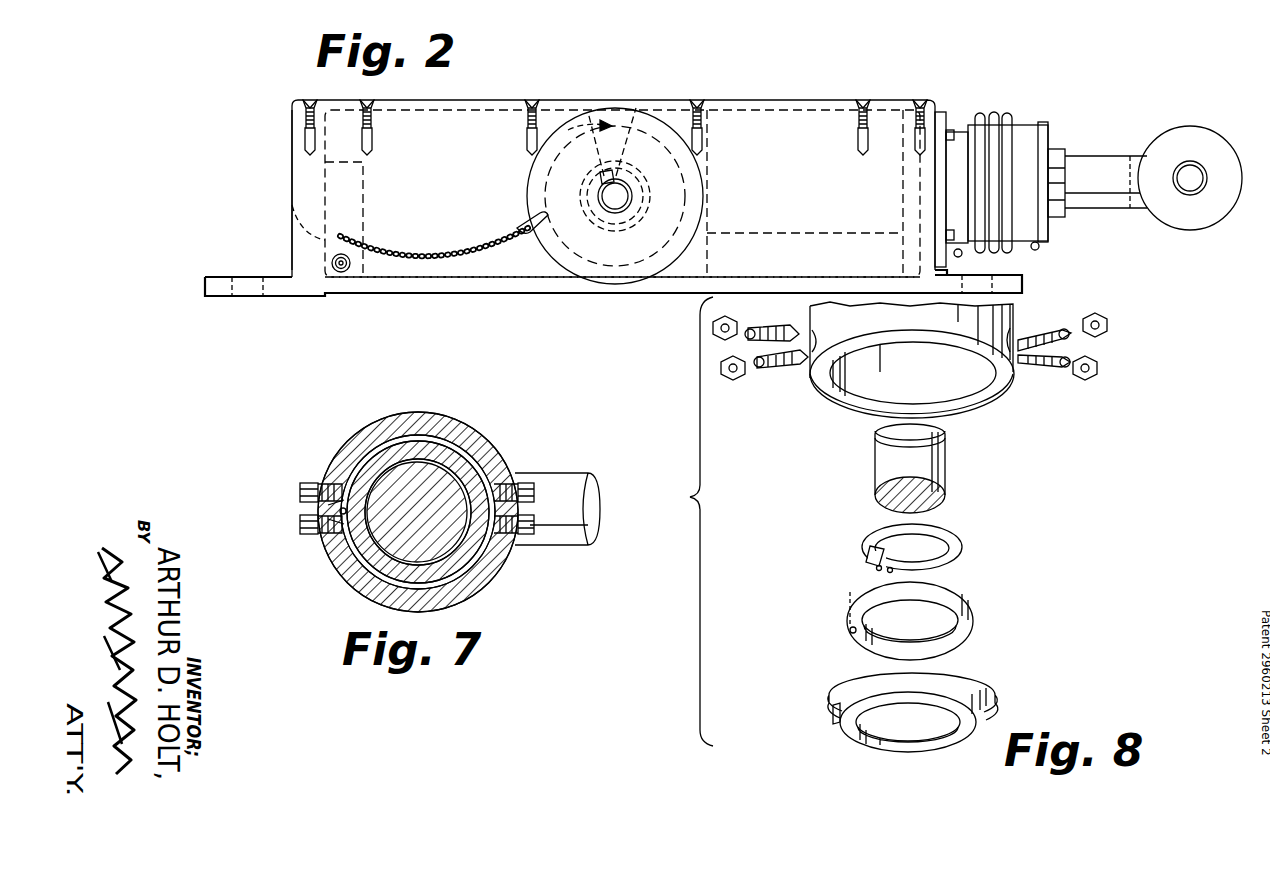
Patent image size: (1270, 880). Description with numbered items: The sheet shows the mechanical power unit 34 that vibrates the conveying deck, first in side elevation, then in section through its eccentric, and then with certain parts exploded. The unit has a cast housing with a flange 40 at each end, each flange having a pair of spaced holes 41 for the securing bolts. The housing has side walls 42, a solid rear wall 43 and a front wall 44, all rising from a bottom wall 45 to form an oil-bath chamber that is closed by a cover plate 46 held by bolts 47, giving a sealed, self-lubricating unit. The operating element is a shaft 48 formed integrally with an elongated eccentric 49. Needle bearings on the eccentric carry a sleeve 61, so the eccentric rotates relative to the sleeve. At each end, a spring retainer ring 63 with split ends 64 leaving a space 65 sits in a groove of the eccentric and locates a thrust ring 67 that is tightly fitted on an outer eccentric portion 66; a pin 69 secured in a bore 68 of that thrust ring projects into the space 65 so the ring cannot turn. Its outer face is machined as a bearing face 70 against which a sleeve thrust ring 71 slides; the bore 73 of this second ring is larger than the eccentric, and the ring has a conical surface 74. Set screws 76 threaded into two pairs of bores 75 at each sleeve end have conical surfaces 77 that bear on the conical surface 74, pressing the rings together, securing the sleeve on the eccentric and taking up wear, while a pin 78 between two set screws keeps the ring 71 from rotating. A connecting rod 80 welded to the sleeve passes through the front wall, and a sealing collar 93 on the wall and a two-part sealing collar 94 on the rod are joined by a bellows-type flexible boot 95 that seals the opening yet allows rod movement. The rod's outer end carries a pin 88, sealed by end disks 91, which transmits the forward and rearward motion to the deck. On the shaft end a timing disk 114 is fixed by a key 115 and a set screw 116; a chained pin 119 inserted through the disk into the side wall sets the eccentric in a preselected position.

In FIG. 2, the mechanical power unit 34 is at (594, 293).
In FIG. 2, the flange 40 is at (210, 283).
In FIG. 2, the spaced holes 41 is at (262, 275).
In FIG. 2, the side walls 42 is at (400, 265).
In FIG. 2, the solid rear wall 43 is at (300, 162).
In FIG. 2, the front wall 44 is at (910, 189).
In FIG. 2, the bottom wall 45 is at (449, 290).
In FIG. 2, the cover plate 46 is at (780, 104).
In FIG. 2, the bolts 47 is at (366, 100).
In FIG. 2, the shaft 48 is at (628, 194).
In FIG. 2, the eccentric 49 is at (575, 192).
In FIG. 8, the sleeve 61 is at (843, 395).
In FIG. 8, the spring retainer ring 63 is at (958, 540).
In FIG. 8, the split ends 64 is at (878, 572).
In FIG. 8, the space 65 is at (870, 546).
In FIG. 7, the outer eccentric portion 66 is at (400, 478).
In FIG. 8, the outer eccentric portion 66 is at (938, 467).
In FIG. 8, the thrust ring 67 is at (975, 615).
In FIG. 8, the bore 68 is at (850, 631).
In FIG. 8, the pin 69 is at (855, 596).
In FIG. 8, the bearing face 70 is at (945, 612).
In FIG. 7, the sleeve thrust ring 71 is at (438, 452).
In FIG. 8, the sleeve thrust ring 71 is at (985, 709).
In FIG. 8, the bore 73 is at (920, 736).
In FIG. 8, the conical surface 74 is at (970, 702).
In FIG. 8, the threaded bores 75 is at (812, 338).
In FIG. 7, the set screw 76 is at (528, 484).
In FIG. 8, the set screw 76 is at (755, 345).
In FIG. 7, the conical surface 77 is at (495, 487).
In FIG. 8, the conical surface 77 is at (796, 362).
In FIG. 7, the pin 78 is at (340, 512).
In FIG. 8, the pin 78 is at (830, 716).
In FIG. 2, the connecting rod 80 is at (1105, 160).
In FIG. 7, the connecting rod 80 is at (580, 478).
In FIG. 2, the pin 88 is at (1198, 167).
In FIG. 2, the end disks 91 is at (1188, 135).
In FIG. 2, the sealing collar 93 is at (946, 122).
In FIG. 2, the two-part sealing collar 94 is at (1060, 146).
In FIG. 2, the flexible boot 95 is at (1006, 132).
In FIG. 2, the timing disk 114 is at (693, 205).
In FIG. 2, the key 115 is at (600, 184).
In FIG. 2, the set screw 116 is at (616, 160).
In FIG. 2, the pin 119 is at (522, 223).